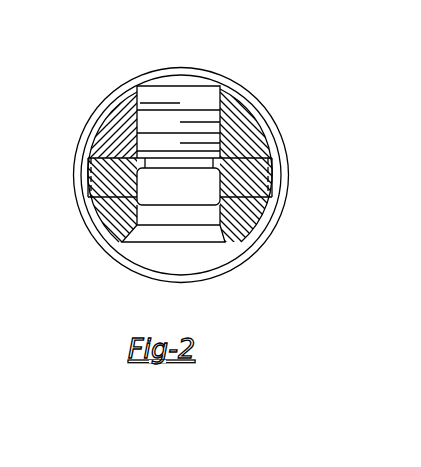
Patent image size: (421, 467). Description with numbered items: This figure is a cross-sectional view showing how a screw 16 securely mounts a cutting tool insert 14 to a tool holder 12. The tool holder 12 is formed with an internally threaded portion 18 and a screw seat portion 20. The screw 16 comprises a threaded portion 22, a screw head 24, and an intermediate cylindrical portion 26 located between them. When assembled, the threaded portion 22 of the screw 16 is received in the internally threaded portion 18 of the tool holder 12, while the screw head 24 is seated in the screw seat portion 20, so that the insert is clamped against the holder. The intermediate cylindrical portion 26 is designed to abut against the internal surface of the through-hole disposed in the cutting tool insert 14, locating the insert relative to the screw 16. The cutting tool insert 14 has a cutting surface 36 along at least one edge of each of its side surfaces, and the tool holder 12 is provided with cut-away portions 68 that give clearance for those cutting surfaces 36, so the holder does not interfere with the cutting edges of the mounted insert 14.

The tool holder 12 is at (118, 128).
The cutting tool insert 14 is at (270, 186).
The screw 16 is at (200, 127).
The internally threaded portion 18 is at (139, 86).
The screw seat portion 20 is at (217, 241).
The threaded portion 22 is at (248, 135).
The screw head 24 is at (140, 255).
The intermediate cylindrical portion 26 is at (90, 153).
The cutting surface 36 is at (78, 193).
The cut-away portions 68 is at (264, 145).